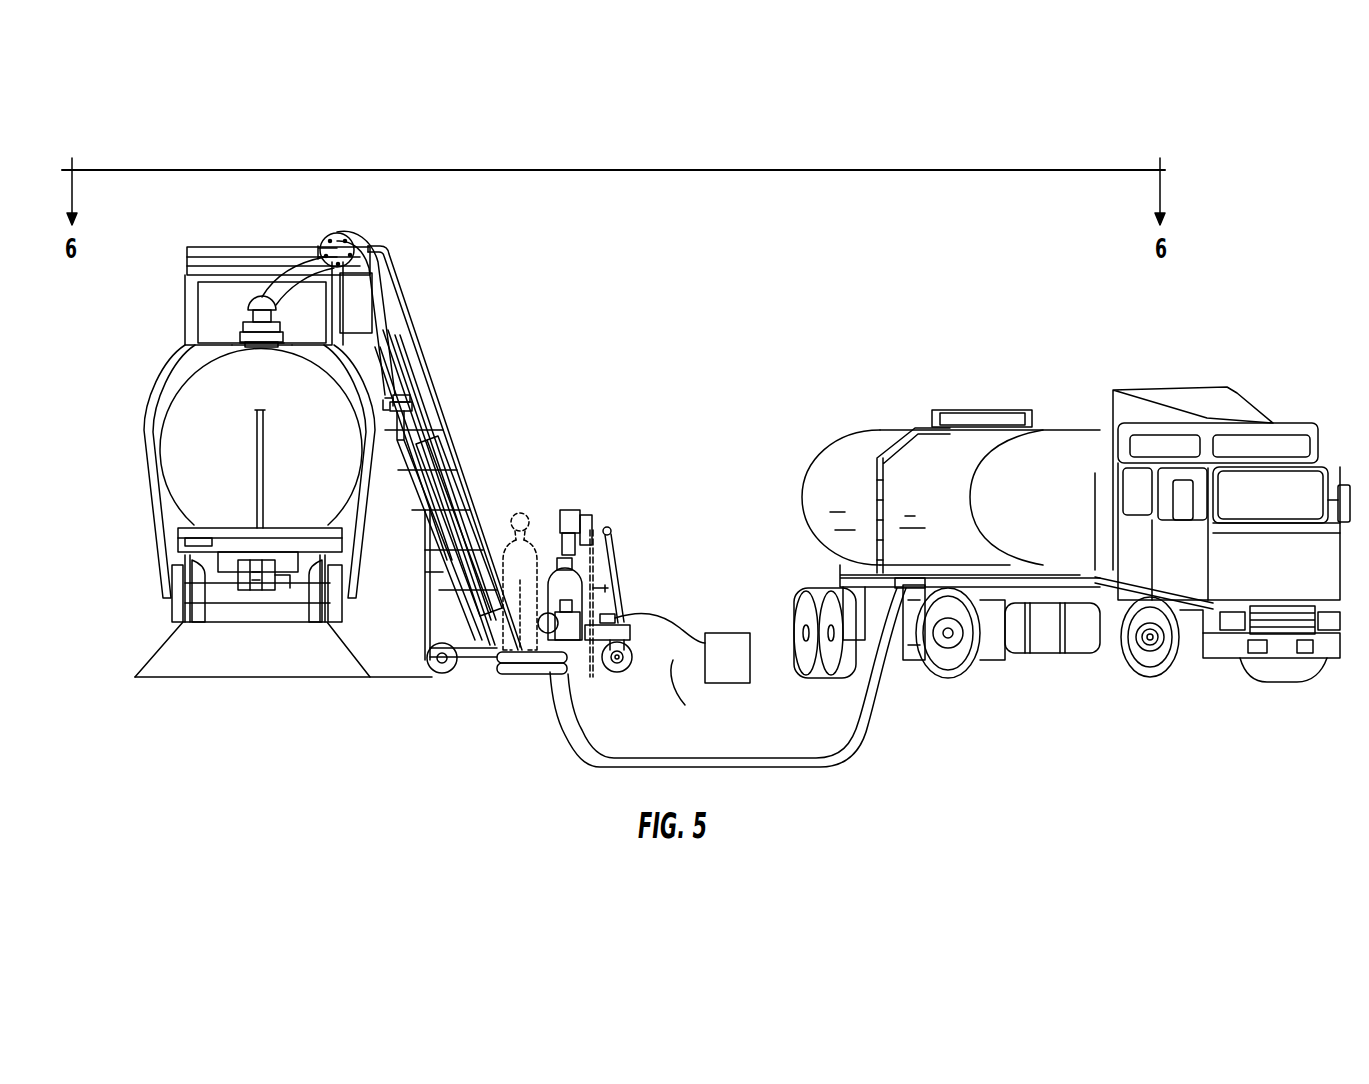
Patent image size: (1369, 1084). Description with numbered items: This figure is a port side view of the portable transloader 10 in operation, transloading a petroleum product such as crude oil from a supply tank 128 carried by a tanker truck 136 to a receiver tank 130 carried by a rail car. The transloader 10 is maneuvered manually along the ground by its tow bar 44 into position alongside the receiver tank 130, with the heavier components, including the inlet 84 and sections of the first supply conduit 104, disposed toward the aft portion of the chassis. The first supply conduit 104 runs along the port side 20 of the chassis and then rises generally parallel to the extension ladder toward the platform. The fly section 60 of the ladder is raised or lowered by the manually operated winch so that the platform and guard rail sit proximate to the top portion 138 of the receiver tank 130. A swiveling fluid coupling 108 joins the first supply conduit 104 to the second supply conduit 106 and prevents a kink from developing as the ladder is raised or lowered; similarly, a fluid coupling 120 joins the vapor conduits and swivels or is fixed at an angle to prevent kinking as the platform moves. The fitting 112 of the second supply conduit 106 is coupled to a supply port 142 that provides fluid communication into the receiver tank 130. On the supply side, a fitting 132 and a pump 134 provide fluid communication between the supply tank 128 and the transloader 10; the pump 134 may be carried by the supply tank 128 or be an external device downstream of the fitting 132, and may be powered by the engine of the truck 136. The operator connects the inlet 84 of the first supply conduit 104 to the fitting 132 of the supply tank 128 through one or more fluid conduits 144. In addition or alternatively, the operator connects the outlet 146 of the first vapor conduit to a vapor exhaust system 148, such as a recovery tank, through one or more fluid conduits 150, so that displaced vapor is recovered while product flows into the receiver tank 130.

The transloader 10 is at (568, 284).
The port side 20 is at (508, 700).
The tow bar 44 is at (613, 557).
The fly section 60 is at (425, 410).
The inlet 84 is at (580, 672).
The first supply conduit 104 is at (428, 512).
The second supply conduit 106 is at (384, 336).
The fluid coupling 108 is at (412, 398).
The fitting 112 is at (276, 264).
The fluid coupling 120 is at (392, 418).
The supply tank 128 is at (905, 418).
The receiver tank 130 is at (195, 370).
The fitting 132 is at (910, 582).
The pump 134 is at (918, 660).
The truck 136 is at (1177, 388).
The top portion 138 is at (228, 333).
The supply port 142 is at (278, 318).
The fluid conduits 144 is at (877, 712).
The outlet 146 is at (603, 611).
The vapor exhaust system 148 is at (742, 672).
The fluid conduits 150 is at (688, 699).